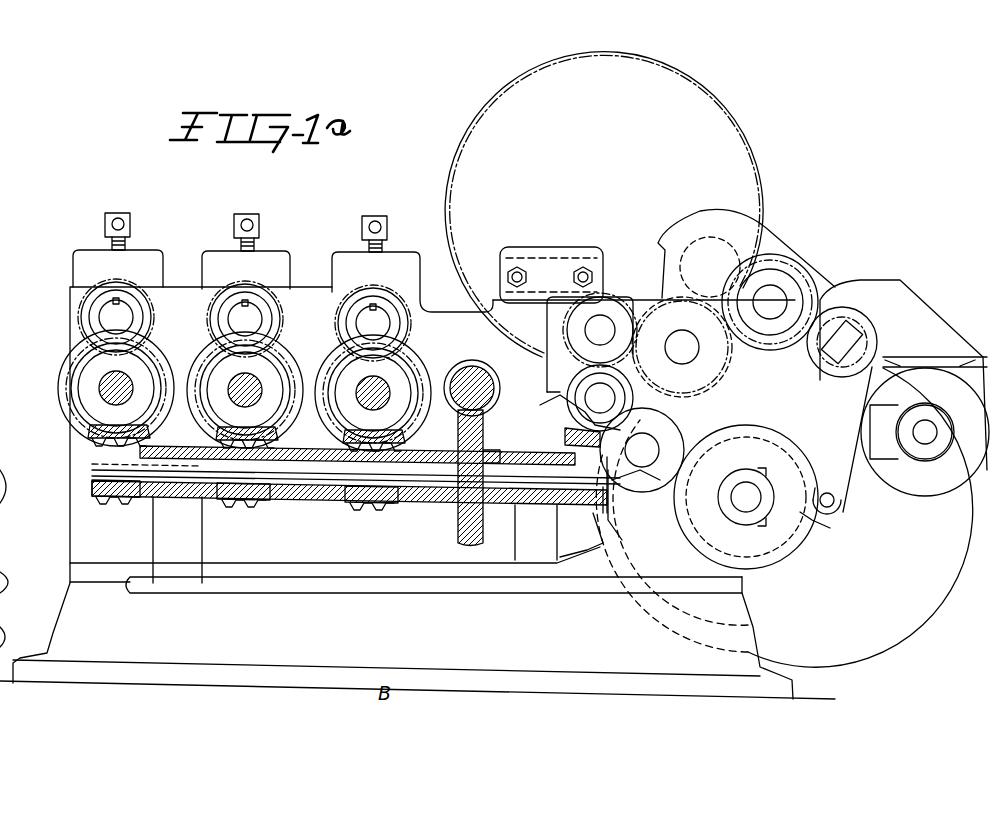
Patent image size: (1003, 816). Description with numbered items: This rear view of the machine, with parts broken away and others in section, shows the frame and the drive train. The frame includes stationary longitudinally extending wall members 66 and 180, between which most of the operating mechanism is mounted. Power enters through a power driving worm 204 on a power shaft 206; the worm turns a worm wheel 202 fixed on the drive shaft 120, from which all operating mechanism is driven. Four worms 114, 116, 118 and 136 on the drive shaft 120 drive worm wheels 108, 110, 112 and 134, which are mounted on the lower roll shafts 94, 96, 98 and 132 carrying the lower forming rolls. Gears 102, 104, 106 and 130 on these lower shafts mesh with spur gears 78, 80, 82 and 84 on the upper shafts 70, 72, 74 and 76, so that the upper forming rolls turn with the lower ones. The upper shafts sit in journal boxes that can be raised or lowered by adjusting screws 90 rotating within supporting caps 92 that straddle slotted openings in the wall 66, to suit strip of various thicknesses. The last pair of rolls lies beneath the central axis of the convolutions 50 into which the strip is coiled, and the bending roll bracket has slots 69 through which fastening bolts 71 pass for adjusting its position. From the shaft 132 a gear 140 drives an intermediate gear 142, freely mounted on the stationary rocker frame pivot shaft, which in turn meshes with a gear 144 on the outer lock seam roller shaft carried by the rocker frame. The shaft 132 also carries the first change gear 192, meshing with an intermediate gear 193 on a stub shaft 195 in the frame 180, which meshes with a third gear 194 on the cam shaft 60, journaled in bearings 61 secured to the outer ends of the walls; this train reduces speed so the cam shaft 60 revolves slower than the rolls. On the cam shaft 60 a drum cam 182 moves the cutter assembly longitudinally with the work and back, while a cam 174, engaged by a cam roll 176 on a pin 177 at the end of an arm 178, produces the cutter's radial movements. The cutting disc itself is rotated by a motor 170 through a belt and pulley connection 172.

The convolutions 50 is at (742, 150).
The cam shaft 60 is at (740, 506).
The bearings 61 is at (760, 530).
The wall member 66 is at (72, 547).
The slots 69 is at (574, 276).
The shaft 70 is at (122, 316).
The fastening bolts 71 is at (506, 274).
The shaft 72 is at (252, 318).
The shaft 74 is at (380, 322).
The shaft 76 is at (588, 328).
The spur gear 78 is at (150, 324).
The spur gear 80 is at (278, 325).
The spur gear 82 is at (408, 340).
The spur gear 84 is at (550, 360).
The adjusting screws 90 is at (128, 244).
The supporting caps 92 is at (78, 268).
The shaft 94 is at (100, 392).
The shaft 96 is at (252, 395).
The shaft 98 is at (380, 398).
The gear 102 is at (146, 345).
The gear 104 is at (278, 348).
The gear 106 is at (410, 360).
The worm wheel 108 is at (88, 436).
The worm wheel 110 is at (276, 440).
The worm wheel 112 is at (404, 443).
The worm 114 is at (92, 504).
The worm 116 is at (240, 504).
The worm 118 is at (382, 506).
The drive shaft 120 is at (300, 484).
The gear 130 is at (572, 394).
The shaft 132 is at (590, 399).
The worm wheel 134 is at (560, 438).
The worm 136 is at (596, 514).
The gear 140 is at (684, 396).
The intermediate gear 142 is at (752, 342).
The gear 144 is at (810, 300).
The motor 170 is at (948, 470).
The belt and pulley connection 172 is at (928, 486).
The cam 174 is at (812, 538).
The cam roll 176 is at (834, 506).
The pin 177 is at (838, 502).
The arm 178 is at (832, 488).
The wall member 180 is at (744, 582).
The drum cam 182 is at (866, 586).
The change gear 192 is at (582, 416).
The intermediate gear 193 is at (640, 490).
The gear 194 is at (616, 514).
The stub shaft 195 is at (668, 458).
The worm wheel 202 is at (460, 532).
The power driving worm 204 is at (480, 366).
The power shaft 206 is at (480, 408).